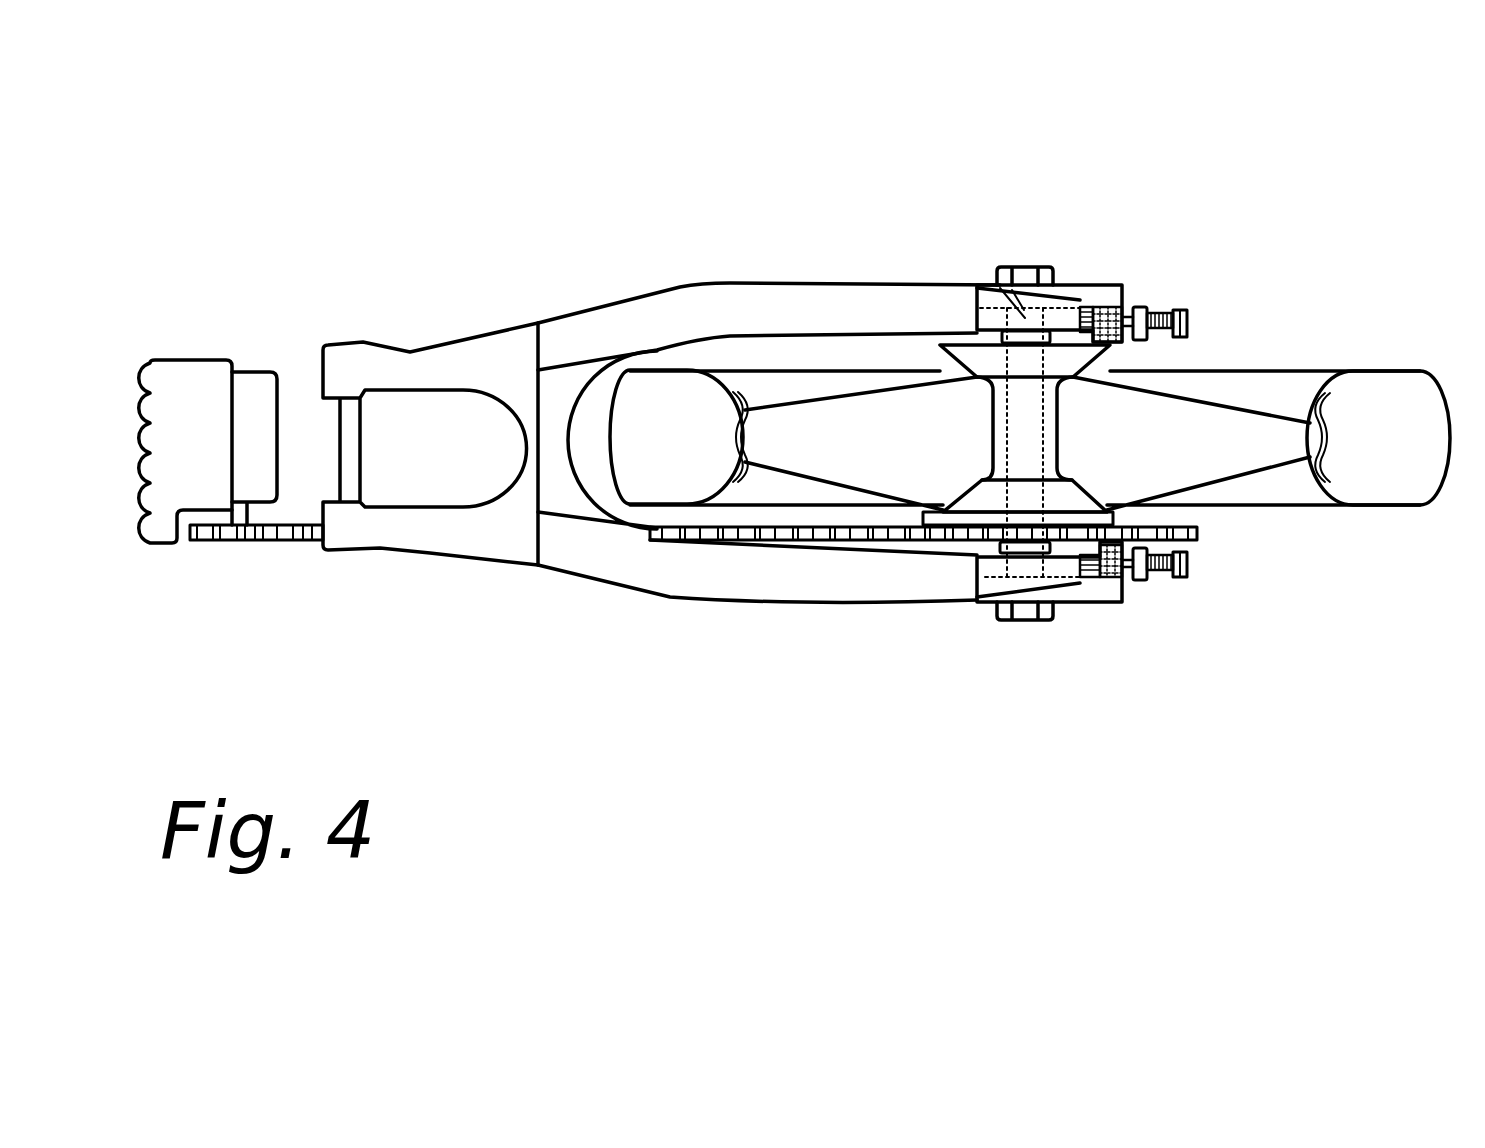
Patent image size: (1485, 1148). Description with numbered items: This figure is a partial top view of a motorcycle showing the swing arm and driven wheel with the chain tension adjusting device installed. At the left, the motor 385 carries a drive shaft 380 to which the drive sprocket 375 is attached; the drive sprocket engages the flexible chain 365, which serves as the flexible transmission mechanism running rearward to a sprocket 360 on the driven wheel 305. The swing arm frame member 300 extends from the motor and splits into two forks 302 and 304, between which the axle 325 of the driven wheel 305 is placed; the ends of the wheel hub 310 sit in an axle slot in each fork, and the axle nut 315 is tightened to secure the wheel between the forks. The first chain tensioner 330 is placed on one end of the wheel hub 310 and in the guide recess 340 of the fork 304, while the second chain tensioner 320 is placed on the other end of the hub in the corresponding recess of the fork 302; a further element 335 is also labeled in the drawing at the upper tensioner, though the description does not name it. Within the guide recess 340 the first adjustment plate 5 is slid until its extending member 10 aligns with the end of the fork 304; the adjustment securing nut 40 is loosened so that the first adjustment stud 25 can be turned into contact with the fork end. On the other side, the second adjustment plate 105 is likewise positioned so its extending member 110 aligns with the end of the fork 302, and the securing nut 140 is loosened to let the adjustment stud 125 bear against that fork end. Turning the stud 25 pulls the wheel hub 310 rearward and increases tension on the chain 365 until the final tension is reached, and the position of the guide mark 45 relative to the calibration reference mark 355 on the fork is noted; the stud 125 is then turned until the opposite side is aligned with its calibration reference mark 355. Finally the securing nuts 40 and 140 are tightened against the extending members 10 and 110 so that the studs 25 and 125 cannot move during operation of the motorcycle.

The first adjustment plate 5 is at (1110, 603).
The extending member 10 is at (1197, 543).
The first adjustment stud 25 is at (1170, 577).
The adjustment securing nut 40 is at (1150, 577).
The guide mark 45 is at (997, 278).
The second adjustment plate 105 is at (1124, 285).
The extending member 110 is at (1127, 345).
The adjustment stud 125 is at (1183, 312).
The adjustment securing nut 140 is at (1140, 306).
The swing arm frame member 300 is at (508, 327).
The fork 302 is at (733, 283).
The fork 304 is at (670, 597).
The driven wheel 305 is at (1333, 370).
The wheel hub 310 is at (975, 378).
The axle nut 315 is at (1010, 266).
The second chain tensioner 320 is at (1070, 283).
The axle 325 is at (997, 455).
The first chain tensioner 330 is at (1078, 603).
The upper clamp 335 is at (977, 290).
The guide recess 340 is at (977, 575).
The calibration reference mark 355 is at (993, 292).
The sprocket 360 is at (1165, 517).
The chain 365 is at (283, 540).
The drive sprocket 375 is at (235, 543).
The drive shaft 380 is at (250, 515).
The motor 385 is at (172, 360).